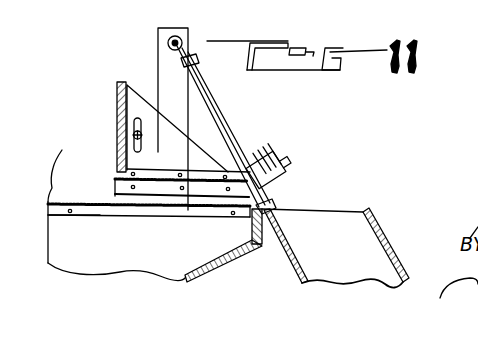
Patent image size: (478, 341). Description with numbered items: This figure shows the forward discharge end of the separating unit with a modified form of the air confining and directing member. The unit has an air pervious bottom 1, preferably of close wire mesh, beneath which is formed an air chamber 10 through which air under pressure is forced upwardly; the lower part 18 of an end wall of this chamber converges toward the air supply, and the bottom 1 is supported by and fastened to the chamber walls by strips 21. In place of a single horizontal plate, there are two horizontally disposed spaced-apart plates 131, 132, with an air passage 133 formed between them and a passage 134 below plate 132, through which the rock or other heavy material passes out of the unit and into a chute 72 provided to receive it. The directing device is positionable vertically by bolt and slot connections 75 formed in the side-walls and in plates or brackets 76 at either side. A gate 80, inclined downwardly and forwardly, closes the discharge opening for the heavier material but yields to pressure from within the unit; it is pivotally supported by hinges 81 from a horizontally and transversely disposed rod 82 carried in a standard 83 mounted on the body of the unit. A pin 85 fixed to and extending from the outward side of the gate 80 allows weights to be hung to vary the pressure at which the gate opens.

The air pervious bottom 1 is at (77, 202).
The air chamber 10 is at (121, 250).
The lower part of end wall 18 is at (218, 266).
The strips 21 is at (85, 214).
The chute 72 is at (381, 226).
The bolt and slot connections 75 is at (133, 137).
The plates or brackets 76 is at (167, 128).
The gate 80 is at (186, 112).
The hinges 81 is at (192, 59).
The rod 82 is at (169, 50).
The standard 83 is at (163, 82).
The pin 85 is at (281, 153).
The plate 131 is at (156, 170).
The plate 132 is at (152, 208).
The air passage 133 is at (114, 187).
The passage 134 is at (104, 214).